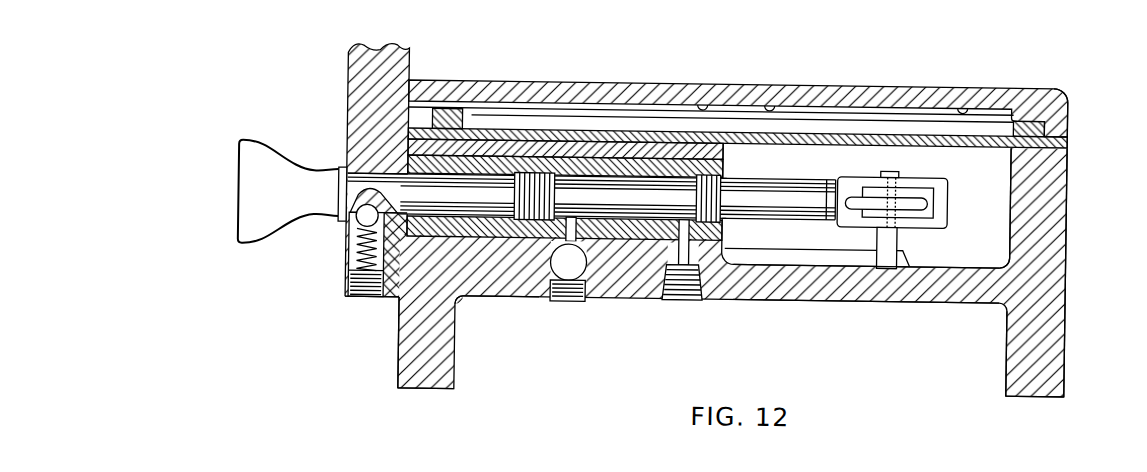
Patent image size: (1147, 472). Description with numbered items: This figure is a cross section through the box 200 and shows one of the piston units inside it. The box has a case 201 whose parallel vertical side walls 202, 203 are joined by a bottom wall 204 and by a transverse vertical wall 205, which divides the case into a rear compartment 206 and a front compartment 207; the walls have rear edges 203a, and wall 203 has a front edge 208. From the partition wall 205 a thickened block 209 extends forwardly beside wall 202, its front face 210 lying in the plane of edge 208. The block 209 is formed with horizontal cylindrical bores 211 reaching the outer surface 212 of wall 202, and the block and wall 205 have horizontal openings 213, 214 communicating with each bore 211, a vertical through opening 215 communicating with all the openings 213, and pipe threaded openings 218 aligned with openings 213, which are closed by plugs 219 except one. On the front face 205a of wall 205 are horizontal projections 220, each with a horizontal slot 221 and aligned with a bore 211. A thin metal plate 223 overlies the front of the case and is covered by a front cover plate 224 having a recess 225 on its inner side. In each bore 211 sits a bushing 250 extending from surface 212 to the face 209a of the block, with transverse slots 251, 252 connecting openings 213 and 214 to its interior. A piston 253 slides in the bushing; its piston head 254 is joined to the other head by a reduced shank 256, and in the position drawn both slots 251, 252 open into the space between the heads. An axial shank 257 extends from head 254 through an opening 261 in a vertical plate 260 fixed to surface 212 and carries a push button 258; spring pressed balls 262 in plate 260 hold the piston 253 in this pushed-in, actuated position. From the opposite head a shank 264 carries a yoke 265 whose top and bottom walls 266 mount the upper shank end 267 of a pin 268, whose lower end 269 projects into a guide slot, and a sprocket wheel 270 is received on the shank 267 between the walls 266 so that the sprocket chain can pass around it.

The box 200 is at (1077, 200).
The case 201 is at (390, 342).
The side wall 202 is at (410, 362).
The side wall 203 is at (1041, 327).
The rear edge 203a is at (1039, 393).
The bottom wall 204 is at (951, 367).
The transverse vertical wall 205 is at (916, 282).
The front face 205a is at (957, 262).
The rear compartment 206 is at (846, 359).
The front compartment 207 is at (996, 212).
The front edge 208 is at (1047, 131).
The block 209 is at (646, 153).
The face of block 209a is at (734, 130).
The front face 210 is at (612, 158).
The horizontal cylindrical bore 211 is at (511, 163).
The outer surface 212 is at (401, 324).
The horizontal opening 213 is at (585, 239).
The horizontal opening 214 is at (706, 298).
The vertical through opening 215 is at (525, 269).
The pipe threaded opening 218 is at (589, 302).
The plug 219 is at (549, 255).
The horizontal projection 220 is at (767, 249).
The horizontal slot 221 is at (797, 251).
The thin metal plate 223 is at (779, 129).
The front cover plate 224 is at (885, 88).
The recess 225 is at (960, 104).
The bushing 250 is at (484, 163).
The transverse slot 251 is at (574, 177).
The transverse slot 252 is at (691, 167).
The piston 253 is at (784, 159).
The piston head 254 is at (532, 165).
The reduced axial shank portion 256 is at (635, 241).
The axial shank portion 257 is at (443, 200).
The push button 258 is at (252, 176).
The vertical plate 260 is at (360, 70).
The through opening 261 is at (362, 177).
The spring pressed ball 262 is at (343, 228).
The shank portion 264 is at (790, 199).
The yoke 265 is at (725, 202).
The yoke wall 266 is at (914, 180).
The upper shank end 267 is at (889, 167).
The pin 268 is at (915, 234).
The lower end of pin 269 is at (885, 272).
The sprocket wheel 270 is at (923, 200).